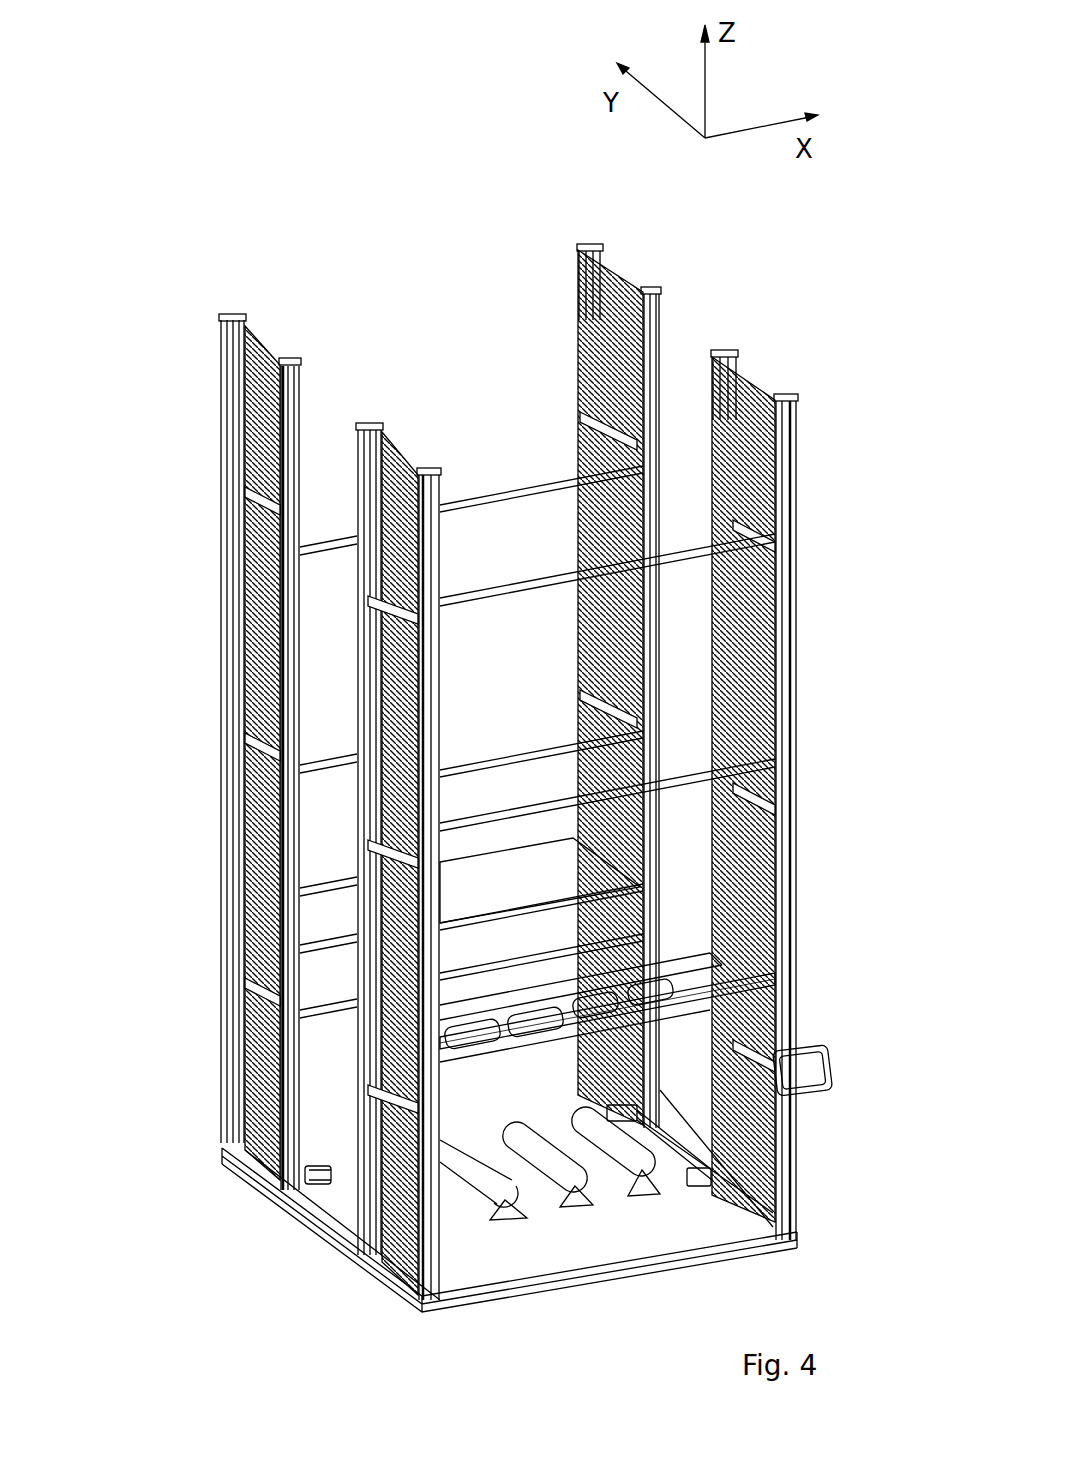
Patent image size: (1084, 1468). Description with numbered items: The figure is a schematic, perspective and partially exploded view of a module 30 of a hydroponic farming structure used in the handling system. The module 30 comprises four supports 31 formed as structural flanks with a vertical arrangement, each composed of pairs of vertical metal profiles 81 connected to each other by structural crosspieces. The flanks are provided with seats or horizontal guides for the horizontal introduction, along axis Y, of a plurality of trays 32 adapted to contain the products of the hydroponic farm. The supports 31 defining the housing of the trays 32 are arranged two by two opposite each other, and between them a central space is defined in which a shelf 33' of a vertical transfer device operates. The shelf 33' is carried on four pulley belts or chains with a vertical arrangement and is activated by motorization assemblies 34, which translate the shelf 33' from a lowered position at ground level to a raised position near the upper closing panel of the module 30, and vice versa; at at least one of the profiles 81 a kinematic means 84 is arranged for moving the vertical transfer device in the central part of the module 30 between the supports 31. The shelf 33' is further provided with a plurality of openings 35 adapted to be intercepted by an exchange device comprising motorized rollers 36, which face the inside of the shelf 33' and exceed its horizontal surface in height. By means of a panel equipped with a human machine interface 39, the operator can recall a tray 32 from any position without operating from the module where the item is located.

The module 30 is at (500, 746).
The support 31 is at (498, 782).
The tray 32 is at (338, 915).
The shelf 33' is at (683, 933).
The motorization assembly 34 is at (312, 1180).
The opening 35 is at (590, 1003).
The motorized roller 36 is at (545, 1168).
The human machine interface panel 39 is at (835, 1068).
The vertical metal profile 81 is at (590, 243).
The kinematic means 84 is at (645, 288).